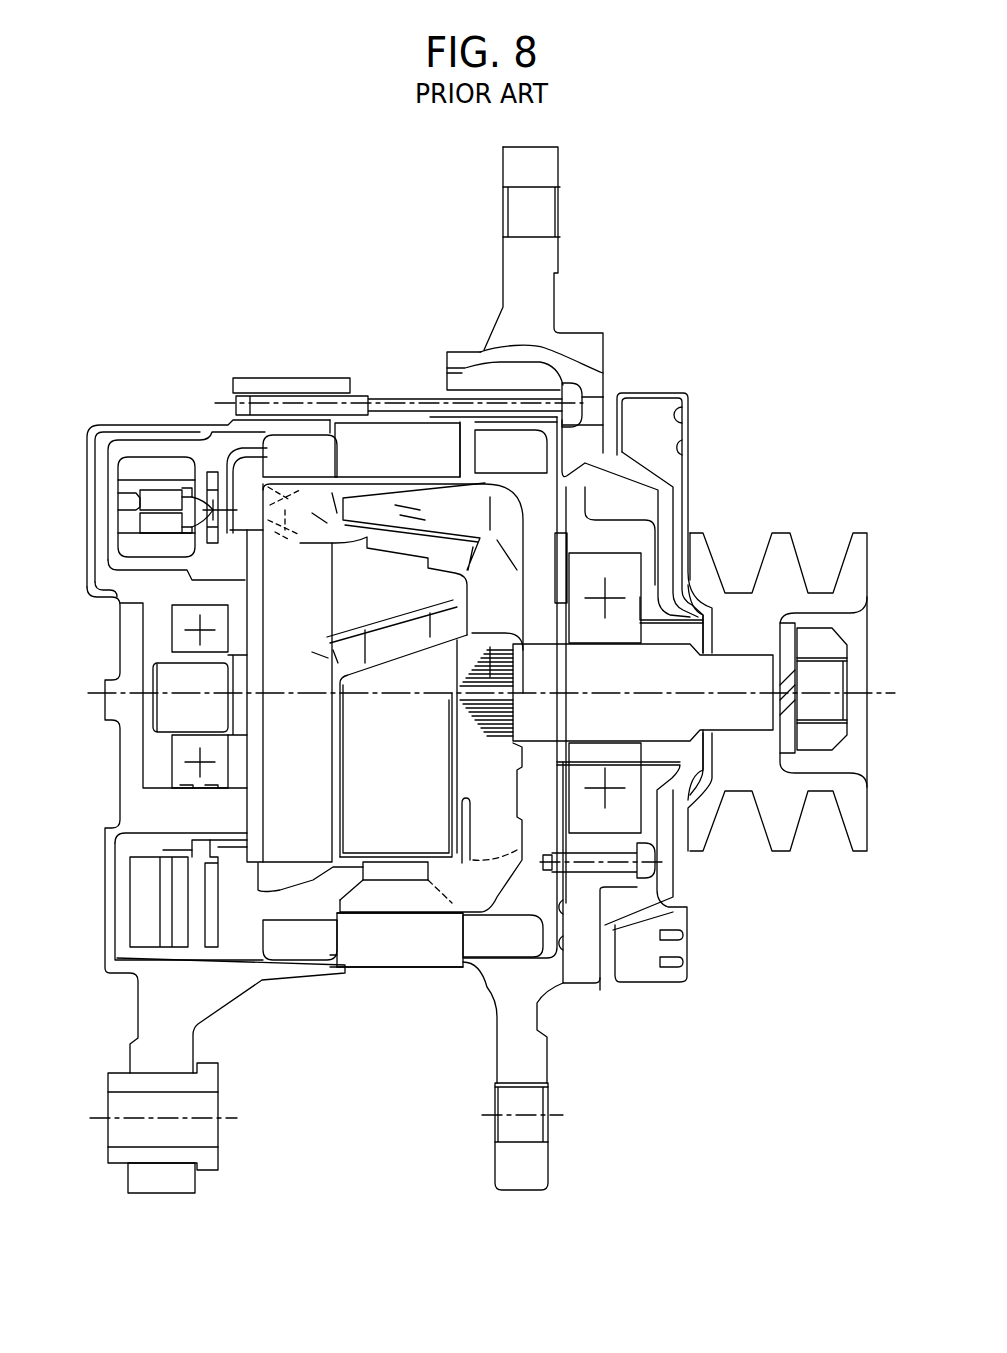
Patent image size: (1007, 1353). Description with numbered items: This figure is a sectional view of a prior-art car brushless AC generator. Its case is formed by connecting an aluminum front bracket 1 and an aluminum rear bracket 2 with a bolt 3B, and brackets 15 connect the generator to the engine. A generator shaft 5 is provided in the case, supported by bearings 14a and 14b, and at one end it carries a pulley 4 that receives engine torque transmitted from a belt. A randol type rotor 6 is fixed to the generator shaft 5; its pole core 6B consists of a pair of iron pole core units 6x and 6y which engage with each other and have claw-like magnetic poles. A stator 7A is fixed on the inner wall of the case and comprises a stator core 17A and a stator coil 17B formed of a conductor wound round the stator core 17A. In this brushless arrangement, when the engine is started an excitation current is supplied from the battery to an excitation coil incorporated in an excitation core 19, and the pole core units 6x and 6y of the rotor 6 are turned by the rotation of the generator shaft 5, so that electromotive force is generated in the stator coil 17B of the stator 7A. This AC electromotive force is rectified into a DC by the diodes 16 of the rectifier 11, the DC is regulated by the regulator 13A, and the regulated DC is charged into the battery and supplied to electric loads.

The front bracket 1 is at (565, 985).
The rear bracket 2 is at (147, 1007).
The bolt 3B is at (573, 385).
The pulley 4 is at (860, 610).
The generator shaft 5 is at (728, 720).
The rotor 6 is at (516, 487).
The pole core 6B is at (456, 294).
The pole core unit 6x is at (313, 497).
The pole core unit 6y is at (420, 500).
The stator 7A is at (434, 996).
The rectifier 11 is at (133, 508).
The regulator 13A is at (200, 940).
The bearing 14a is at (630, 572).
The bearing 14b is at (172, 760).
The brackets 15 is at (543, 166).
The diodes 16 is at (153, 520).
The stator core 17A is at (380, 958).
The stator coil 17B is at (485, 940).
The excitation core 19 is at (392, 647).